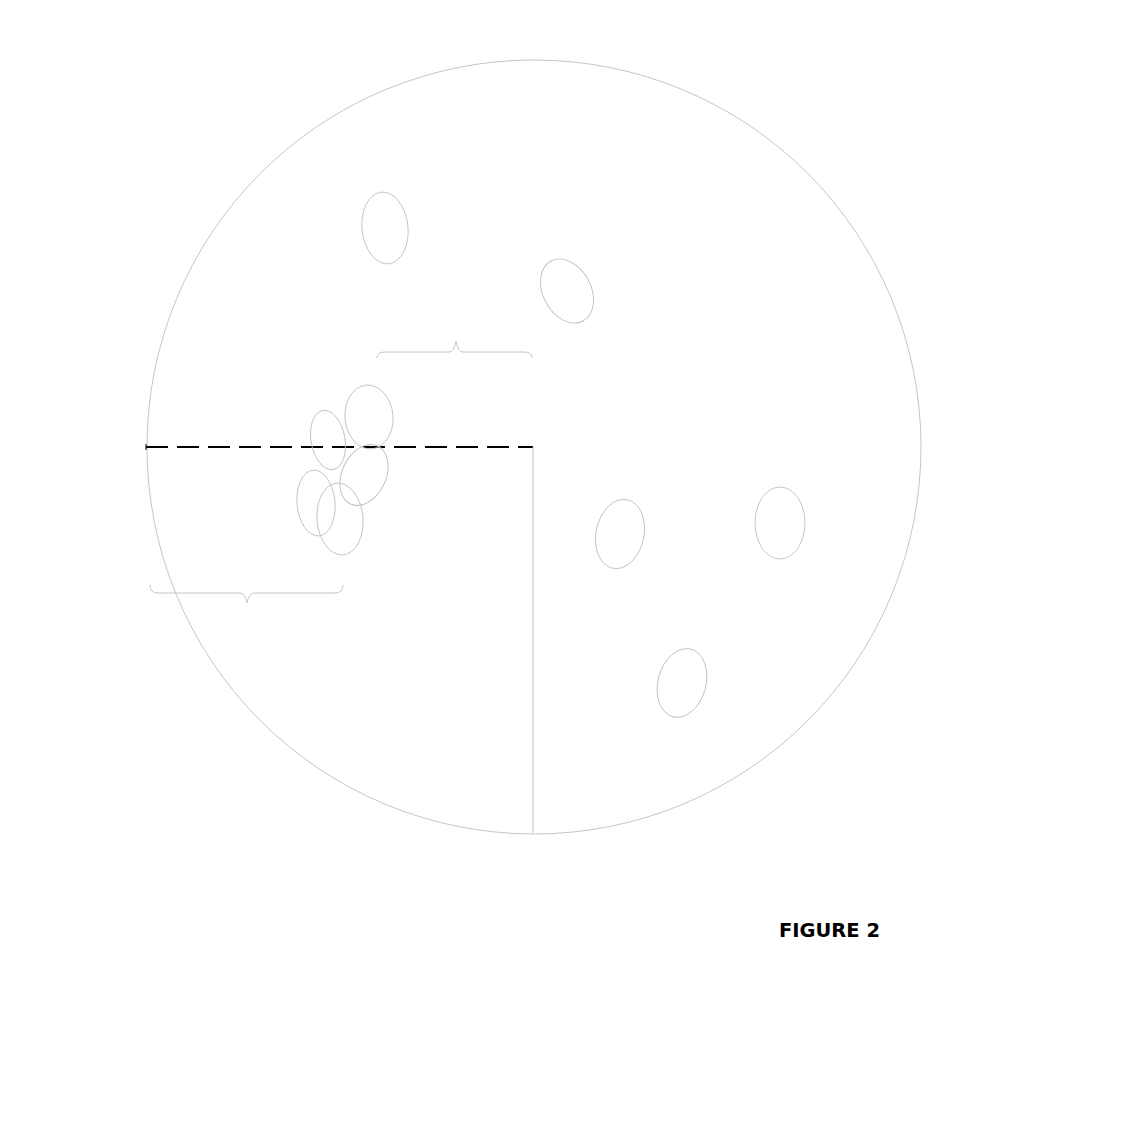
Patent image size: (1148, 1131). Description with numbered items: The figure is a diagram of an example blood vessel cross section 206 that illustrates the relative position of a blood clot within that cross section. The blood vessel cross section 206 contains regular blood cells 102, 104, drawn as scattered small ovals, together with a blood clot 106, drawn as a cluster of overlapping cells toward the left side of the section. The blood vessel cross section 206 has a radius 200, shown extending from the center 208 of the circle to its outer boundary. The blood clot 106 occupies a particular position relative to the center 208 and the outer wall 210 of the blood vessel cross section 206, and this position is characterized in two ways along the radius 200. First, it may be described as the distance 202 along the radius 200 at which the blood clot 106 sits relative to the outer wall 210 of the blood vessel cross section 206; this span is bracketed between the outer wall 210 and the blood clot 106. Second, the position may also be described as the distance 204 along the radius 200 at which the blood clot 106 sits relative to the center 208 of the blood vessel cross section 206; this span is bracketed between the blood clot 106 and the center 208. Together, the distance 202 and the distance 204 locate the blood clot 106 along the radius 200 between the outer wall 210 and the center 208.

The radius 200 is at (533, 620).
The distance 202 is at (246, 619).
The distance 204 is at (454, 324).
The blood vessel cross section 206 is at (533, 60).
The center 208 is at (533, 447).
The outer wall 210 is at (146, 447).
The regular blood cells 102 is at (778, 523).
The regular blood cells 104 is at (588, 278).
The blood clot 106 is at (342, 482).